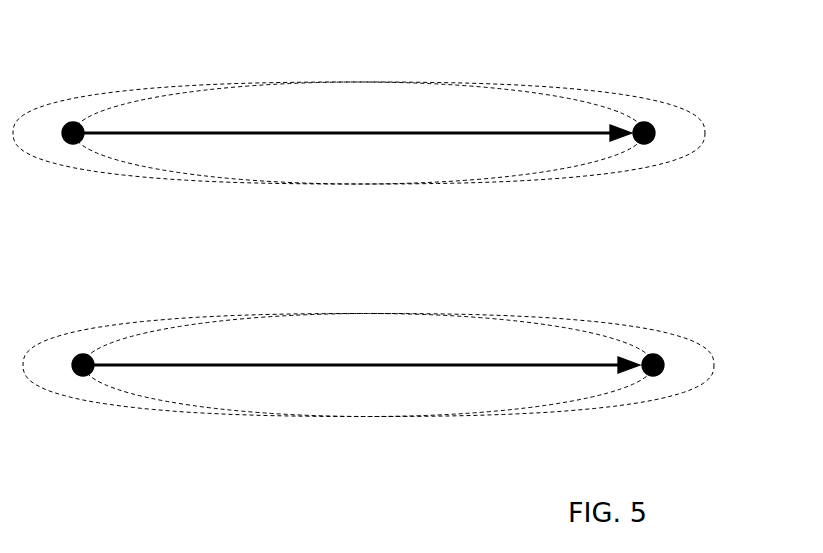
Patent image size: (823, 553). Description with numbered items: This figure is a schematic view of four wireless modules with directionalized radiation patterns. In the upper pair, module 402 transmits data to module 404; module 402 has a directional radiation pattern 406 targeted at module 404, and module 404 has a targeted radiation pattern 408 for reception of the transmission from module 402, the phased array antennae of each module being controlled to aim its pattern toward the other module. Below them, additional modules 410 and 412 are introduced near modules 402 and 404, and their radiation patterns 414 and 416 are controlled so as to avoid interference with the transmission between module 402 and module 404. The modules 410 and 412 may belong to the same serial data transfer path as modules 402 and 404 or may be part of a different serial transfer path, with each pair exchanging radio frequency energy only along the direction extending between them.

The module 402 is at (85, 123).
The module 404 is at (655, 128).
The directional radiation pattern 406 is at (602, 95).
The targeted radiation pattern 408 is at (58, 106).
The module 410 is at (92, 353).
The module 412 is at (663, 358).
The radiation pattern 414 is at (612, 325).
The radiation pattern 416 is at (65, 337).